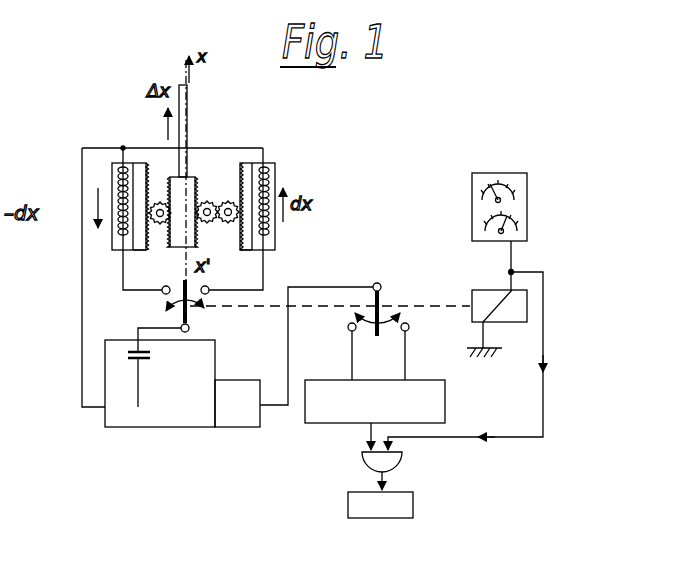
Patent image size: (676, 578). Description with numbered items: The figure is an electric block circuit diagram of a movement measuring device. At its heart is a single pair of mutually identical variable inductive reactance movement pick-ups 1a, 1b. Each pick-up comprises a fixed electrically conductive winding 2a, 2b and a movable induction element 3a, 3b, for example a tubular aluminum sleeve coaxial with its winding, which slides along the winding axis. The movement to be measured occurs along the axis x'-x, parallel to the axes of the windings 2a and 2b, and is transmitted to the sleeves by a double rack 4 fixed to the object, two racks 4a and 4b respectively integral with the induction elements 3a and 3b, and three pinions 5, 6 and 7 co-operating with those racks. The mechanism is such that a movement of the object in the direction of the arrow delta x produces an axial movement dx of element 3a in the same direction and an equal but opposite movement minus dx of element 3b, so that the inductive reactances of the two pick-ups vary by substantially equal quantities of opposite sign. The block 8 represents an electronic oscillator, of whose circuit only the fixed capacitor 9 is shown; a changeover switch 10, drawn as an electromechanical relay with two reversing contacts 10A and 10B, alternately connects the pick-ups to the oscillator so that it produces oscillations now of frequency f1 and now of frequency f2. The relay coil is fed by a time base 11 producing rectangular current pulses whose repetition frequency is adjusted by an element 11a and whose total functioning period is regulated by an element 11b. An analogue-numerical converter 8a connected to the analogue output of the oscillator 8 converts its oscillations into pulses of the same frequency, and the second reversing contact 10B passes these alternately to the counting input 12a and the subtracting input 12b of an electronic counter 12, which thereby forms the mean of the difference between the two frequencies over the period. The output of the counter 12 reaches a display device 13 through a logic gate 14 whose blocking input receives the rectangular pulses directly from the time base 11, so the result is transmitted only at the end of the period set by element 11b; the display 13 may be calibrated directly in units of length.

The movement pick-up 1a is at (278, 166).
The movement pick-up 1b is at (108, 175).
The electrically conductive winding 2a is at (275, 246).
The electrically conductive winding 2b is at (112, 240).
The induction element 3a is at (283, 230).
The induction element 3b is at (114, 250).
The double rack 4 is at (195, 178).
The rack 4a is at (252, 250).
The rack 4b is at (140, 250).
The pinion 5 is at (155, 202).
The pinion 6 is at (210, 201).
The pinion 7 is at (230, 201).
The electronic oscillator 8 is at (152, 412).
The analogue-numerical converter 8a is at (236, 412).
The capacitor 9 is at (150, 356).
The changeover switch 10 is at (527, 306).
The reversing contact 10A is at (168, 301).
The reversing contact 10B is at (383, 300).
The time base 11 is at (527, 210).
The element 11a is at (501, 230).
The element 11b is at (498, 200).
The electronic counter 12 is at (432, 402).
The counting input 12a is at (408, 331).
The subtracting input 12b is at (349, 331).
The display device 13 is at (413, 505).
The logic gate 14 is at (392, 465).